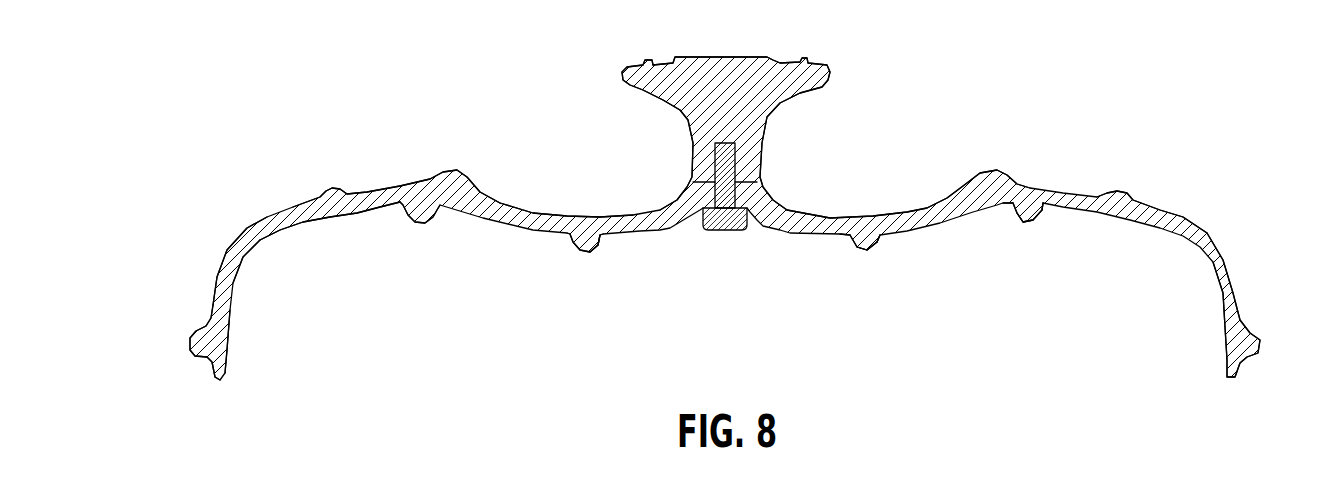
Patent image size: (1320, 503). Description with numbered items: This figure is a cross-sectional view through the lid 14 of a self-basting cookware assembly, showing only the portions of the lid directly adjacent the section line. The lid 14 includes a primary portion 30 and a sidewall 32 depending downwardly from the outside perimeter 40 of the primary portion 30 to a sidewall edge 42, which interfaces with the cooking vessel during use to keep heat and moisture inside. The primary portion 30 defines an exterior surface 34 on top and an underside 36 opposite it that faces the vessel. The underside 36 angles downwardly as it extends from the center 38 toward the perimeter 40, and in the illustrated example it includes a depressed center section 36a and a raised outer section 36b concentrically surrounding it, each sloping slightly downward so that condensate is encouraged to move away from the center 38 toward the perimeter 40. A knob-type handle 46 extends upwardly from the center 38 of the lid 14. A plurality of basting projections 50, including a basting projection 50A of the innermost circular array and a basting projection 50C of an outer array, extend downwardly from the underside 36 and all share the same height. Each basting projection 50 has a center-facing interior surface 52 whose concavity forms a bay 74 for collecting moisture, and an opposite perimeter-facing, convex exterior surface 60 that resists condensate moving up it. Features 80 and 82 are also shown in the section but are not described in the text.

The lid 14 is at (186, 160).
The primary portion 30 is at (940, 212).
The sidewall 32 is at (1237, 297).
The exterior surface 34 is at (1173, 220).
The underside 36 is at (355, 215).
The depressed center section 36a is at (572, 213).
The raised outer section 36b is at (397, 187).
The center 38 is at (760, 226).
The perimeter 40 is at (246, 252).
The sidewall edge 42 is at (222, 382).
The handle 46 is at (771, 55).
The basting projection 50 is at (582, 250).
The basting projection 50A is at (862, 247).
The basting projection 50C is at (1023, 223).
The interior surface 52 is at (850, 235).
The exterior surface 60 is at (880, 240).
The bay 74 is at (597, 237).
The rib 80 is at (503, 225).
The inner surface 82 is at (290, 228).